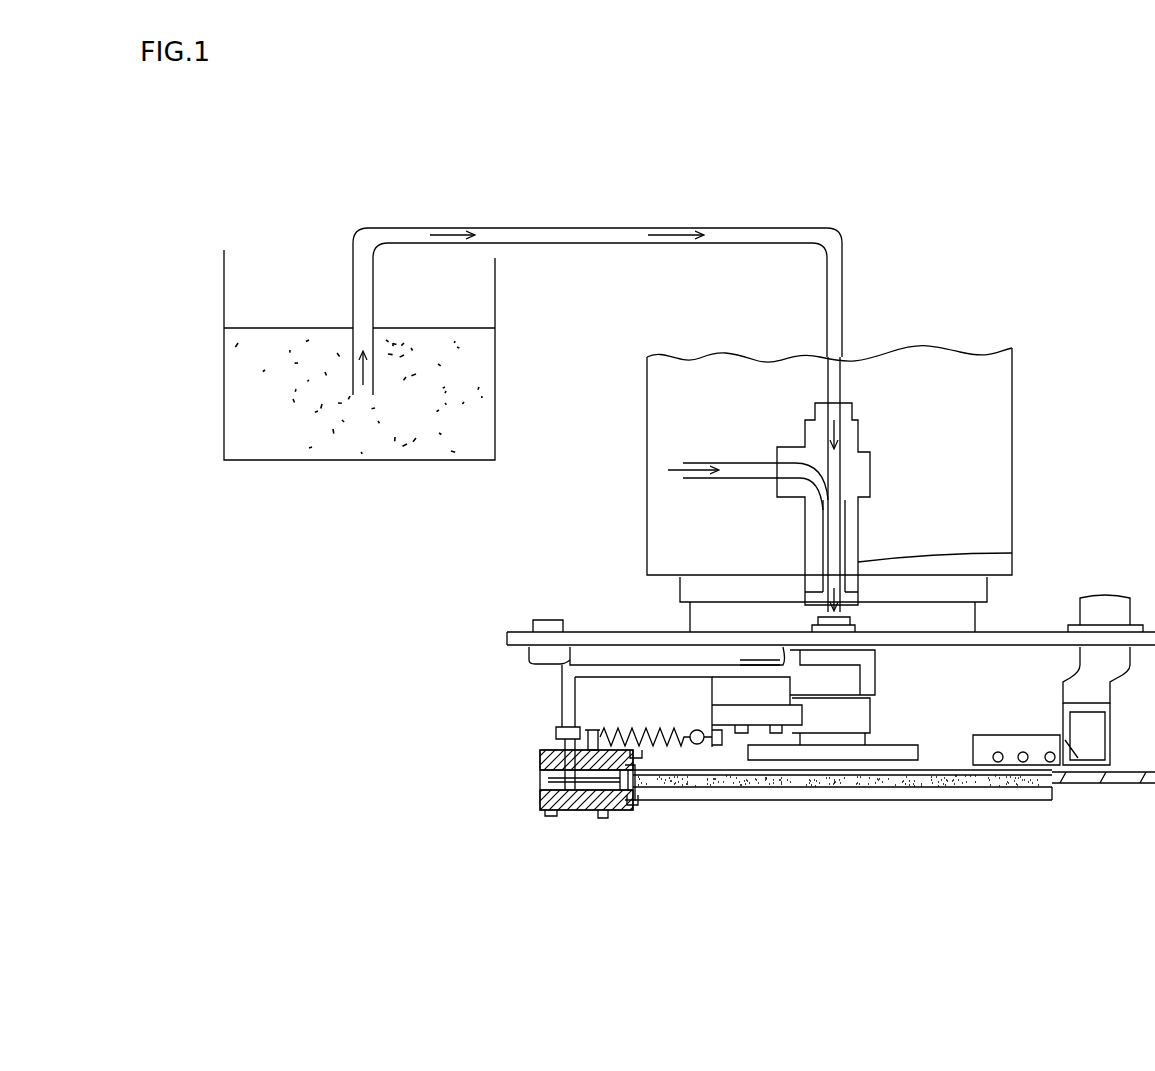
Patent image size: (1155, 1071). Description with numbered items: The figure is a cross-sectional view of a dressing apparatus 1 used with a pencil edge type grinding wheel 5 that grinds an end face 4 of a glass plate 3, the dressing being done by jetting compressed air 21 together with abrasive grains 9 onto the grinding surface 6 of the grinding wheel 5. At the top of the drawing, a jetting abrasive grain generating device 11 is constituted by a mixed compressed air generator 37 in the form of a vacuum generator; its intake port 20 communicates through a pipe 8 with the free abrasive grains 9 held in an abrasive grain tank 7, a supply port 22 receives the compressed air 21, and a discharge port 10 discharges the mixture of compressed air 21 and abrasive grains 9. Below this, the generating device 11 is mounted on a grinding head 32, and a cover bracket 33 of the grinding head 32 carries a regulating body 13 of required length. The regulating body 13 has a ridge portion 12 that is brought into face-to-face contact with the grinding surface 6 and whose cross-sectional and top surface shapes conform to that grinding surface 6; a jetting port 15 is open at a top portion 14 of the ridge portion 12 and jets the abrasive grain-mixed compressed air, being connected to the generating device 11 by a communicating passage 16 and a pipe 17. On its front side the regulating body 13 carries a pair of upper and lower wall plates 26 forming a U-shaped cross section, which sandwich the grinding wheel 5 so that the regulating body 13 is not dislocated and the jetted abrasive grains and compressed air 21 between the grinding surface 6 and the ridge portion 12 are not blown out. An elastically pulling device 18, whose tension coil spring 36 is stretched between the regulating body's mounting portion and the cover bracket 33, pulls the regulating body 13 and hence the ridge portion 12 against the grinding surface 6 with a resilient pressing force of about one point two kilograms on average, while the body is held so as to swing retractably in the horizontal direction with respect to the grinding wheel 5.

The dressing apparatus 1 is at (908, 289).
The glass plate 3 is at (1132, 788).
The end face 4 is at (1065, 780).
The grinding wheel 5 is at (818, 790).
The grinding surface 6 is at (662, 790).
The abrasive grain tank 7 is at (282, 327).
The pipe 8 is at (606, 235).
The abrasive grains 9 is at (554, 235).
The discharge port 10 is at (834, 533).
The jetting abrasive grain generating device 11 is at (862, 472).
The ridge portion 12 is at (604, 818).
The regulating body 13 is at (546, 782).
The top portion 14 is at (632, 792).
The jetting port 15 is at (623, 800).
The communicating passage 16 is at (570, 811).
The pipe 17 is at (612, 662).
The elastically pulling device 18 is at (598, 740).
The intake port 20 is at (841, 379).
The compressed air 21 is at (740, 474).
The supply port 22 is at (775, 463).
The wall plates 26 is at (636, 753).
The grinding head 32 is at (997, 413).
The cover bracket 33 is at (1044, 632).
The tension coil spring 36 is at (658, 735).
The mixed compressed air generator 37 is at (1012, 556).